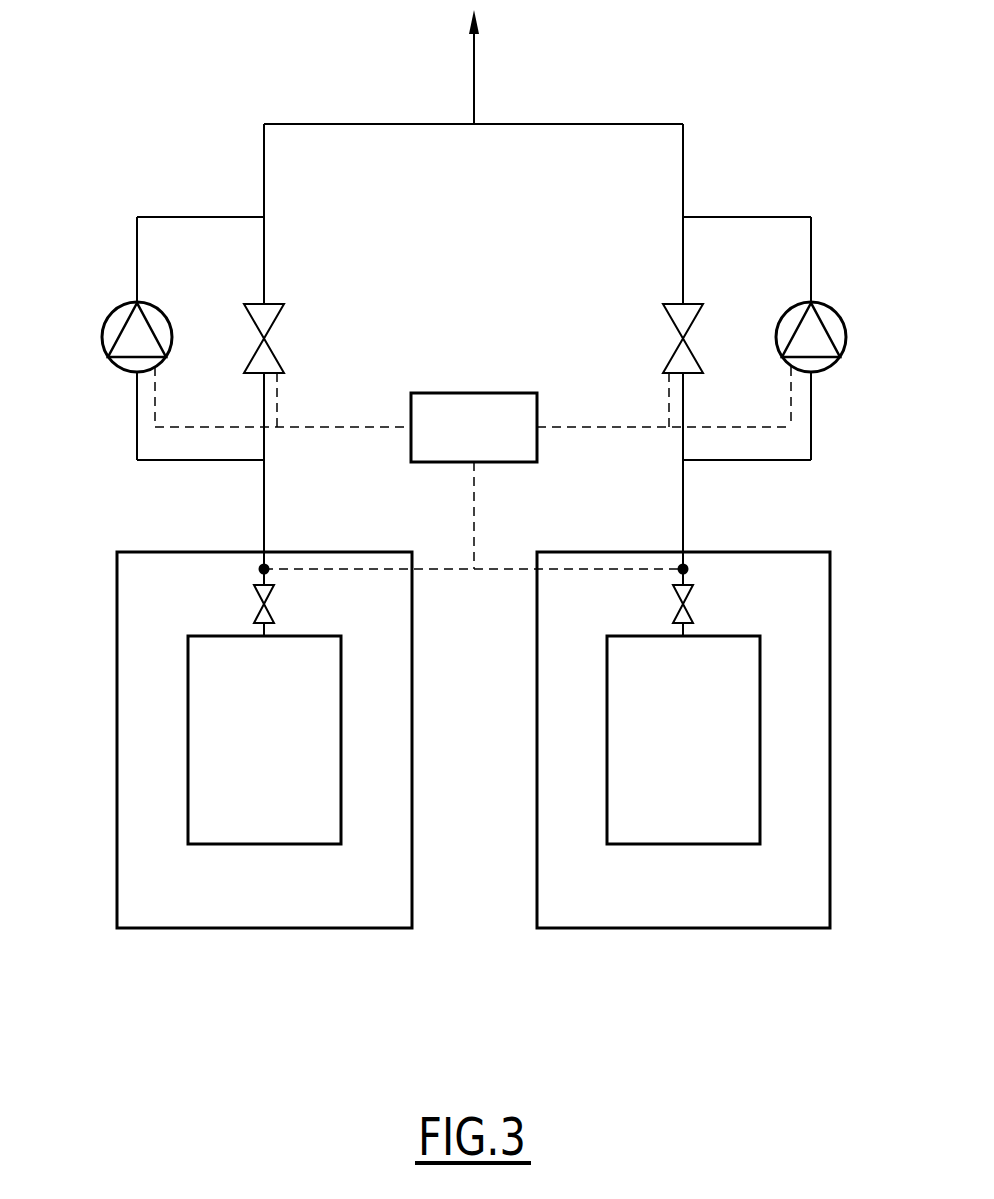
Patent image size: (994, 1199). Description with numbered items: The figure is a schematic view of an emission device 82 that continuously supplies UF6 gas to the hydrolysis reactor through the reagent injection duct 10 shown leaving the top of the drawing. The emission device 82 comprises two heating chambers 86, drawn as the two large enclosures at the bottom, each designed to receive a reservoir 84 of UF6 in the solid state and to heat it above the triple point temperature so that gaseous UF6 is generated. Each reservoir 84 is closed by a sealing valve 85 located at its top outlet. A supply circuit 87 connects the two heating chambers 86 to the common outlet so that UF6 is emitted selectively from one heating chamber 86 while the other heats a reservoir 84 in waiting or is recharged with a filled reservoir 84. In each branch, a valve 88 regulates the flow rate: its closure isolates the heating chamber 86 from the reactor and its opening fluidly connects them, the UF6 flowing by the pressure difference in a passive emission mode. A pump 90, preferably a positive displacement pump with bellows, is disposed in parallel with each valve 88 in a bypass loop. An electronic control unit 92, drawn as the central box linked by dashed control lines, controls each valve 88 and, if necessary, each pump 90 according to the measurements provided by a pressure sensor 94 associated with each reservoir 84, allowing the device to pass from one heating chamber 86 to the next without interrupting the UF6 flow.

The reagent injection duct 10 is at (474, 80).
The emission device 82 is at (473, 802).
The reservoir 84 is at (188, 672).
The sealing valve 85 is at (254, 595).
The heating chamber 86 is at (117, 785).
The supply circuit 87 is at (702, 198).
The valve 88 is at (284, 323).
The pump 90 is at (107, 312).
The electronic control unit 92 is at (474, 393).
The pressure sensor 94 is at (268, 565).